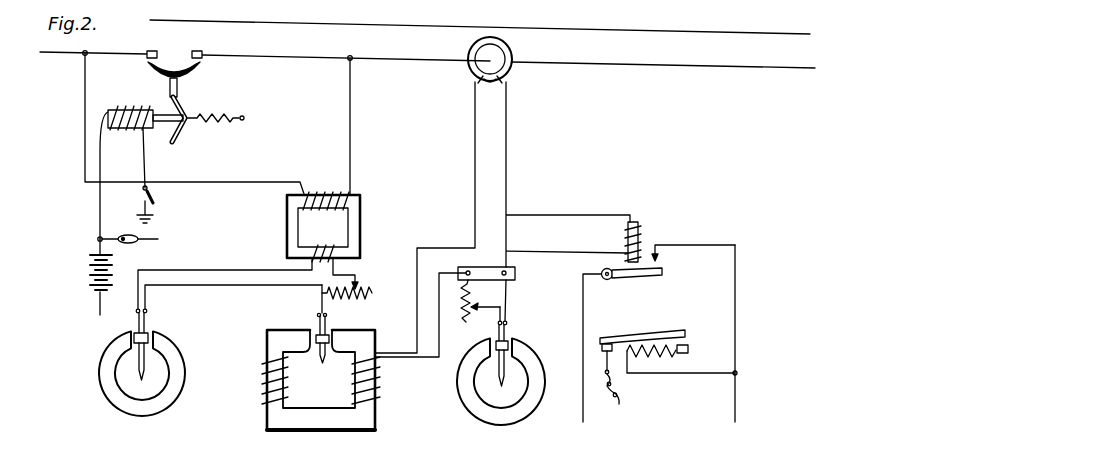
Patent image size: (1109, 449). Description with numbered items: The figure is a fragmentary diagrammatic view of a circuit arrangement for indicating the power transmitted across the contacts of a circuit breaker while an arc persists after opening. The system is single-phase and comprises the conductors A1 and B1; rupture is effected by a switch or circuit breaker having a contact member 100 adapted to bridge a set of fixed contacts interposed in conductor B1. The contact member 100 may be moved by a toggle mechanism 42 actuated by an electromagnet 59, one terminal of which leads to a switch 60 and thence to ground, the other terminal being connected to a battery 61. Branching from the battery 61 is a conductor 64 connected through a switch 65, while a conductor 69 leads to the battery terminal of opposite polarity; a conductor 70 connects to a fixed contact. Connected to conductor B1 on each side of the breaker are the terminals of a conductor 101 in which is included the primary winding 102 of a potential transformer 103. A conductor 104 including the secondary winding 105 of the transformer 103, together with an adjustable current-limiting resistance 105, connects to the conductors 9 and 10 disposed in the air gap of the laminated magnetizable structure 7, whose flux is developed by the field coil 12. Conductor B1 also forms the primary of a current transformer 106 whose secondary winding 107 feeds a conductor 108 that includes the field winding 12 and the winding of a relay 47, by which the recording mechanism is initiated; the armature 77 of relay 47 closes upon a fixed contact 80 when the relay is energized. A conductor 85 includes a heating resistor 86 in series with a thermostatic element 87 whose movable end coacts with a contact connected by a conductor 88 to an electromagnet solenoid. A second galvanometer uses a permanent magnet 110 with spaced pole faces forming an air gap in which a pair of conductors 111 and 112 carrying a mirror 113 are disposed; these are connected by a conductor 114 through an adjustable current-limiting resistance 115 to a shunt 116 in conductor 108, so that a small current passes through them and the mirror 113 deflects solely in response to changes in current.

The conductor A1 is at (755, 33).
The conductor B1 is at (755, 67).
The laminated magnetizable structure 7 is at (376, 425).
The conductor 9 is at (326, 318).
The conductor 10 is at (318, 318).
The field coil 12 is at (266, 385).
The toggle mechanism 42 is at (184, 110).
The relay 47 is at (640, 224).
The electromagnet 59 is at (128, 133).
The switch 60 is at (152, 195).
The battery 61 is at (90, 270).
The conductor 64 is at (103, 237).
The switch 65 is at (128, 243).
The conductor 69 is at (582, 340).
The conductor 70 is at (736, 318).
The armature 77 is at (660, 280).
The fixed contact 80 is at (658, 262).
The conductor 85 is at (680, 374).
The resistor 86 is at (665, 355).
The thermostatic element 87 is at (623, 336).
The conductor 88 is at (600, 377).
The contact member 100 is at (200, 70).
The conductor 101 is at (84, 153).
The primary winding 102 is at (308, 195).
The potential transformer 103 is at (360, 222).
The conductor 104 is at (247, 287).
The secondary winding 105 is at (321, 247).
The current transformer 106 is at (512, 52).
The secondary winding 107 is at (502, 90).
The conductor 108 is at (474, 181).
The permanent magnet 110 is at (163, 398).
The conductor 111 is at (498, 322).
The conductor 112 is at (148, 312).
The mirror 113 is at (150, 337).
The conductor 114 is at (136, 313).
The adjustable current-limiting resistance 115 is at (458, 300).
The shunt 116 is at (480, 266).